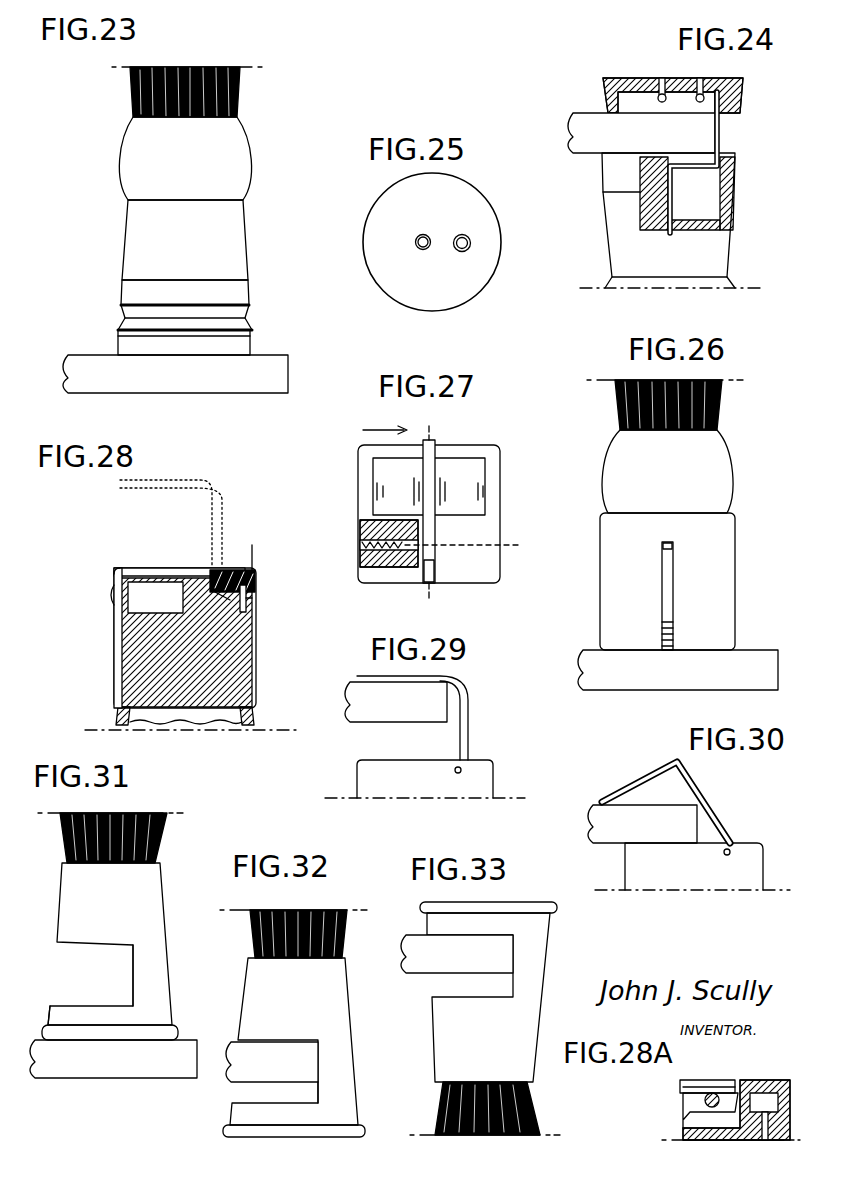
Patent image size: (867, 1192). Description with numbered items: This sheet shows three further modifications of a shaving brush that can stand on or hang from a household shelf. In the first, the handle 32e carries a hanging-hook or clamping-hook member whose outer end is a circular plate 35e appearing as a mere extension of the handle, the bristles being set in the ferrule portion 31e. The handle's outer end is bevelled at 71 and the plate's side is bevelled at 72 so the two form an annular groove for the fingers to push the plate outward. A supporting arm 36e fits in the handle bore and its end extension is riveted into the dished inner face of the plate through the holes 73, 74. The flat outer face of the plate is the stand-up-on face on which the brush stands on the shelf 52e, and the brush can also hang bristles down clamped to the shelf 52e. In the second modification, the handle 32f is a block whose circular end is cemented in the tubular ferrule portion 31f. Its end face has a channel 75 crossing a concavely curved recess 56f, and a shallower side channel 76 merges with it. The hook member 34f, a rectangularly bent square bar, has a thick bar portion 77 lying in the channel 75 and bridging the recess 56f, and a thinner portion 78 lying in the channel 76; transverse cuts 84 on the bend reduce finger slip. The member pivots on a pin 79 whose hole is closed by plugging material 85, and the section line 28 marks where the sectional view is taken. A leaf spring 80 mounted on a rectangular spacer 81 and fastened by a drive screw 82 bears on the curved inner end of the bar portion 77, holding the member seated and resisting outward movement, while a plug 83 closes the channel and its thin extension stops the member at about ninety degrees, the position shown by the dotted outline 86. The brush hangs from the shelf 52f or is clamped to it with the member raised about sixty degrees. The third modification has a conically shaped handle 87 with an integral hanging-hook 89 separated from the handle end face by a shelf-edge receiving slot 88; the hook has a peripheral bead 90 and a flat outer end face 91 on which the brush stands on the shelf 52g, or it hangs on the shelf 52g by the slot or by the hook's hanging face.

In FIG. 23, the bulbous brush head portion 31e is at (120, 157).
In FIG. 23, the handle 32e is at (122, 240).
In FIG. 24, the handle 32e is at (735, 247).
In FIG. 23, the bevelled outer end of handle 71 is at (118, 313).
In FIG. 23, the bevelled side portion of plate 72 is at (246, 328).
In FIG. 23, the circular plate 35e is at (251, 345).
In FIG. 25, the circular plate 35e is at (485, 286).
In FIG. 24, the circular plate 35e is at (605, 79).
In FIG. 23, the shelf 52e is at (190, 395).
In FIG. 24, the shelf 52e is at (570, 130).
In FIG. 25, the screw 73 is at (416, 237).
In FIG. 24, the screw 73 is at (662, 80).
In FIG. 25, the holes 74 is at (470, 238).
In FIG. 24, the holes 74 is at (703, 86).
In FIG. 24, the supporting arm 36e is at (722, 146).
In FIG. 26, the tubular ferrule portion 31f is at (735, 446).
In FIG. 26, the handle 32f is at (737, 534).
In FIG. 27, the handle 32f is at (500, 473).
In FIG. 29, the handle 32f is at (357, 776).
In FIG. 30, the handle 32f is at (764, 832).
In FIG. 26, the side channel 76 is at (660, 541).
In FIG. 28, the side channel 76 is at (114, 670).
In FIG. 26, the thinner bar portion 78 is at (668, 590).
In FIG. 28, the thinner bar portion 78 is at (114, 635).
In FIG. 30, the thinner bar portion 78 is at (648, 776).
In FIG. 26, the shelf 52f is at (752, 656).
In FIG. 29, the shelf 52f is at (360, 723).
In FIG. 30, the shelf 52f is at (586, 826).
In FIG. 27, the section line 28 is at (432, 515).
In FIG. 27, the thick bar portion 77 is at (431, 457).
In FIG. 28, the thick bar portion 77 is at (142, 568).
In FIG. 29, the thick bar portion 77 is at (470, 722).
In FIG. 28A, the thick bar portion 77 is at (705, 1086).
In FIG. 27, the recess 56f is at (380, 493).
In FIG. 28, the recess 56f is at (157, 605).
In FIG. 27, the plugging material 85 is at (370, 545).
In FIG. 27, the pivot pin 79 is at (477, 548).
In FIG. 28, the pivot pin 79 is at (212, 574).
In FIG. 29, the pivot pin 79 is at (462, 768).
In FIG. 27, the plug 83 is at (433, 572).
In FIG. 28, the plug 83 is at (257, 547).
In FIG. 28, the dotted outline 86 is at (225, 485).
In FIG. 28, the end-face channel 75 is at (118, 570).
In FIG. 28A, the end-face channel 75 is at (680, 1086).
In FIG. 28, the brush hanging-hook or clamping-hook member 34f is at (110, 578).
In FIG. 28, the transverse cuts 84 is at (112, 590).
In FIG. 28, the rectangular spacer 81 is at (255, 590).
In FIG. 28, the drive screw 82 is at (250, 601).
In FIG. 28, the leaf spring 80 is at (232, 596).
In FIG. 28A, the leaf spring 80 is at (685, 1120).
In FIG. 31, the brush body 87 is at (166, 915).
In FIG. 32, the brush body 87 is at (245, 986).
In FIG. 31, the slot or shelf edge receiving opening 88 is at (130, 960).
In FIG. 31, the brush hanging-hook 89 is at (50, 1005).
In FIG. 32, the brush hanging-hook 89 is at (354, 1096).
In FIG. 31, the shelf 52g is at (68, 1078).
In FIG. 32, the shelf 52g is at (235, 1086).
In FIG. 33, the shelf 52g is at (418, 975).
In FIG. 32, the peripheral flange or bead 90 is at (362, 1130).
In FIG. 33, the outer end face of hanging-hook 91 is at (530, 897).